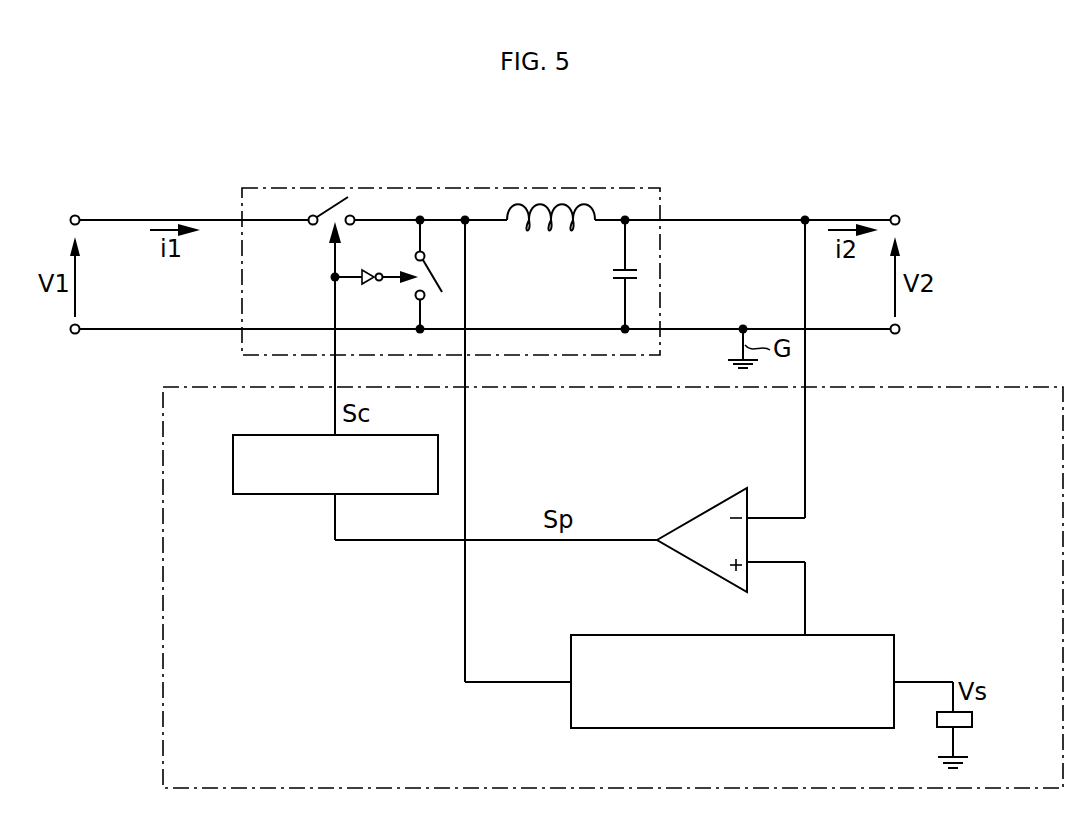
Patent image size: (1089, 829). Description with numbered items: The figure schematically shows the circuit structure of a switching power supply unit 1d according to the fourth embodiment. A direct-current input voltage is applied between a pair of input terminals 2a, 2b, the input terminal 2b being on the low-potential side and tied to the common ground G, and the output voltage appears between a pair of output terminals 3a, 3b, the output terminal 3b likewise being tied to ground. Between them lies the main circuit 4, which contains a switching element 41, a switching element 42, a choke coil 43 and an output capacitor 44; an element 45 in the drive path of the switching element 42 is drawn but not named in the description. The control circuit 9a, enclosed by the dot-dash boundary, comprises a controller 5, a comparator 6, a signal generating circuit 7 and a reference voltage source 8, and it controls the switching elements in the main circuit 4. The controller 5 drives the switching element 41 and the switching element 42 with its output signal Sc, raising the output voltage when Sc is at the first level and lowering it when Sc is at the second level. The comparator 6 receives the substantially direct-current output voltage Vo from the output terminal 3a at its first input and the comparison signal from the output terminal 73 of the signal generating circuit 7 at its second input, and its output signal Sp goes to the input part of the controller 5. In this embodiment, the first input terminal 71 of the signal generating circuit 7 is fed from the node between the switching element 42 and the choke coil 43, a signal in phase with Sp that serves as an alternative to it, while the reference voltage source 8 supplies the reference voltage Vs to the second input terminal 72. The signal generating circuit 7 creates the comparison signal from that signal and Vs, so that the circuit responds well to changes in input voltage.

The switching power supply unit 1d is at (624, 117).
The input terminal 2a is at (79, 216).
The input terminal 2b is at (79, 333).
The output terminal 3a is at (899, 216).
The output terminal 3b is at (900, 329).
The main circuit 4 is at (478, 188).
The switching element 41 is at (312, 226).
The switching element 42 is at (413, 264).
The choke coil 43 is at (562, 228).
The output capacitor 44 is at (639, 275).
The inverter 45 is at (376, 283).
The controller 5 is at (233, 462).
The comparator 6 is at (716, 500).
The signal generating circuit 7 is at (820, 728).
The first input terminal 71 is at (504, 681).
The second input terminal 72 is at (924, 681).
The output terminal 73 is at (805, 610).
The reference voltage source 8 is at (972, 720).
The control circuit 9a is at (163, 646).